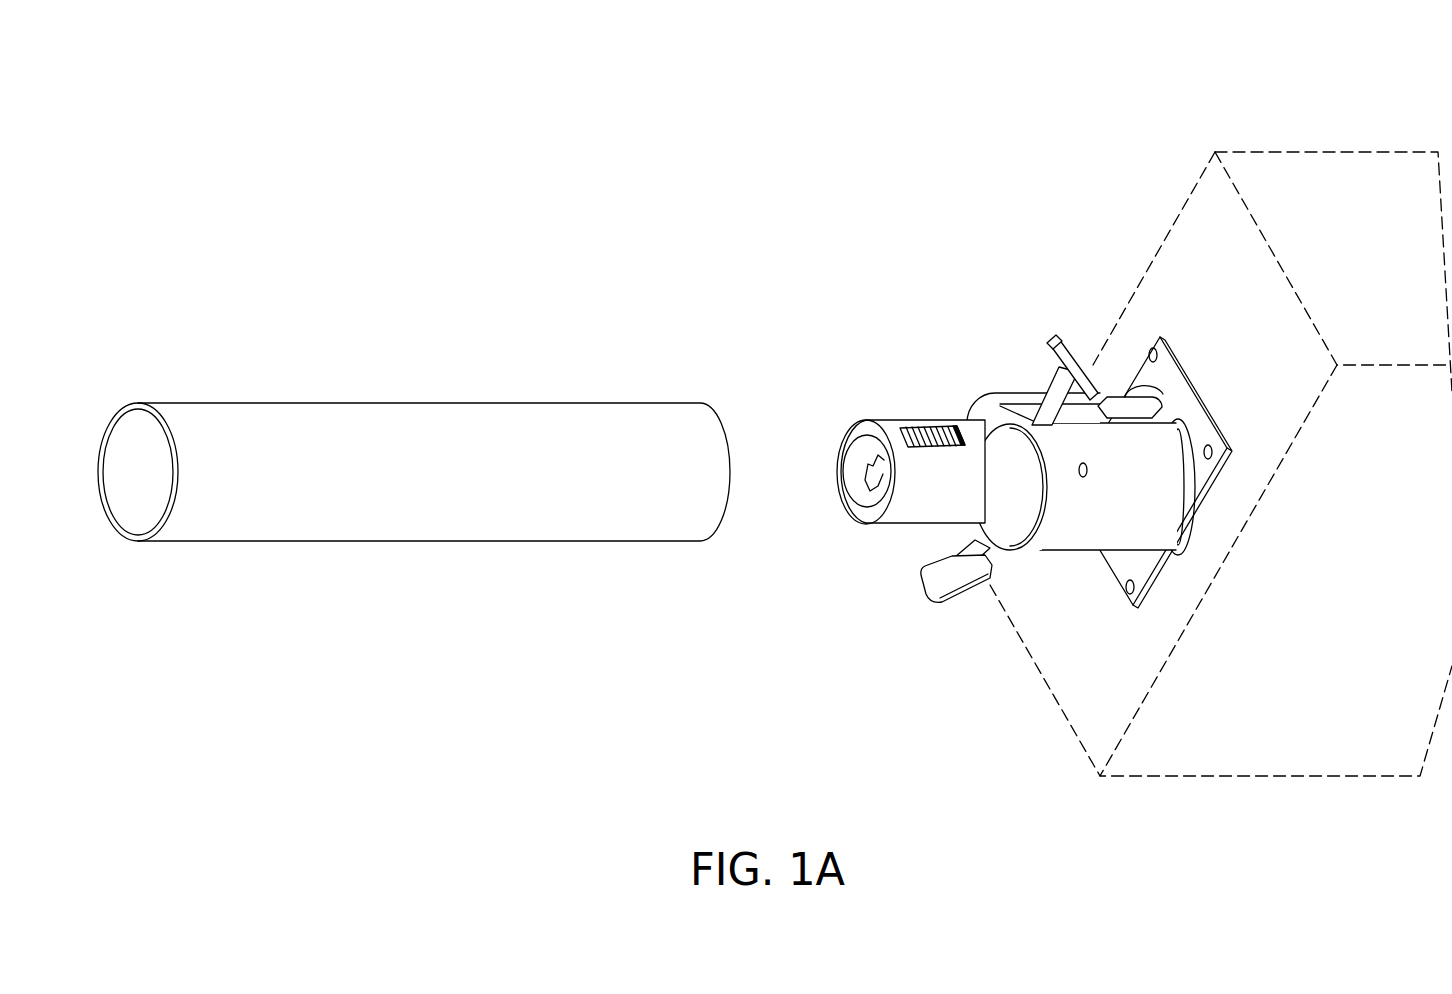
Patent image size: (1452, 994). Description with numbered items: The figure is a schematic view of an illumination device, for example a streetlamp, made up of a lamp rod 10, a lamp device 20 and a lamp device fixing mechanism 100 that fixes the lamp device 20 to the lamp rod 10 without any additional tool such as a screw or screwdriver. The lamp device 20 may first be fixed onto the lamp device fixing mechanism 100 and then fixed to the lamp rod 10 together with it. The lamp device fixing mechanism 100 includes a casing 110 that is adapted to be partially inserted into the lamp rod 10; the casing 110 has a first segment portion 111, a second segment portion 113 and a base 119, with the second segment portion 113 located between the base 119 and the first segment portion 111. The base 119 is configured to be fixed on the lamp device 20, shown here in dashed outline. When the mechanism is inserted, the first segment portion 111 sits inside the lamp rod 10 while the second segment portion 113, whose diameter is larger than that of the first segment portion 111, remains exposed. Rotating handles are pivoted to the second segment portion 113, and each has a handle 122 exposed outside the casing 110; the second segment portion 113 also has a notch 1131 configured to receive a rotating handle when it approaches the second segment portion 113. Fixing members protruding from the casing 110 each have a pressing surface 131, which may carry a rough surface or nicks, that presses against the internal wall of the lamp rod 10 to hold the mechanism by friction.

The lamp rod 10 is at (374, 350).
The lamp device 20 is at (1336, 188).
The lamp device fixing mechanism 100 is at (1034, 486).
The casing 110 is at (1016, 508).
The first segment portion 111 is at (911, 494).
The second segment portion 113 is at (1081, 421).
The notch 1131 is at (1128, 412).
The base 119 is at (1165, 368).
The handle 122 is at (1058, 345).
The pressing surface 131 is at (930, 425).